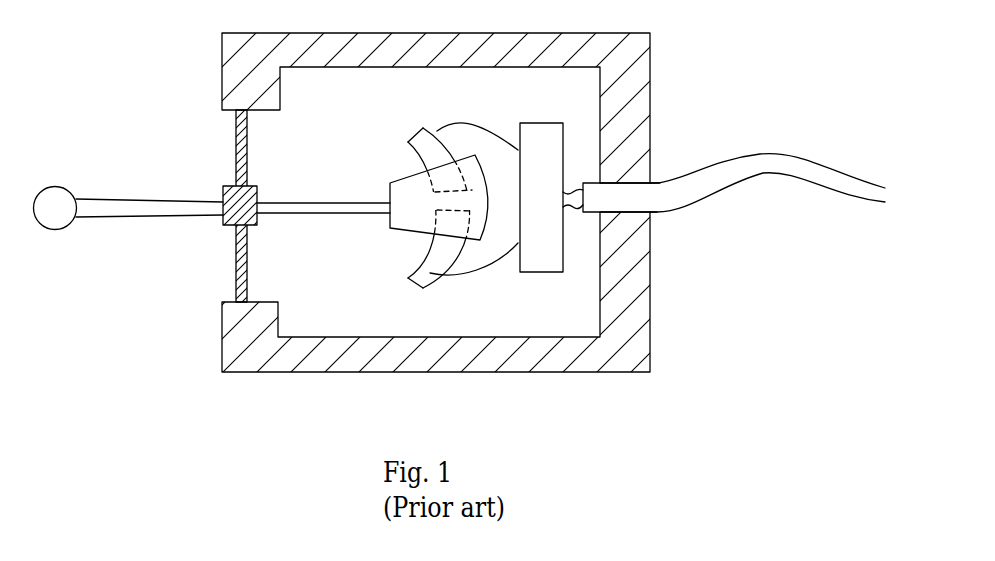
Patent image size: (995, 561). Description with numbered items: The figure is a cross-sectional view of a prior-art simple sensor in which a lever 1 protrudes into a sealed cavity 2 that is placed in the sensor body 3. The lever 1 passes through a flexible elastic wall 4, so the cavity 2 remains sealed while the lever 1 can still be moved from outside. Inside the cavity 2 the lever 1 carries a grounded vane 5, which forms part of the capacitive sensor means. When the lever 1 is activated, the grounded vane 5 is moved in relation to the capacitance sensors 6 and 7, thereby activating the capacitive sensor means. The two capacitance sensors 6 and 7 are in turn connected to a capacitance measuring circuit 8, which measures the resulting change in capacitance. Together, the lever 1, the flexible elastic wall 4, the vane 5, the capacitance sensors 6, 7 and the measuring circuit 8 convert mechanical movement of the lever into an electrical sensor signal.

The lever 1 is at (55, 170).
The sealed cavity 2 is at (294, 316).
The sensor body 3 is at (497, 280).
The flexible elastic wall 4 is at (272, 280).
The grounded vane 5 is at (403, 214).
The capacitance sensor 6 is at (410, 272).
The capacitance sensor 7 is at (404, 147).
The capacitance measuring circuit 8 is at (521, 227).